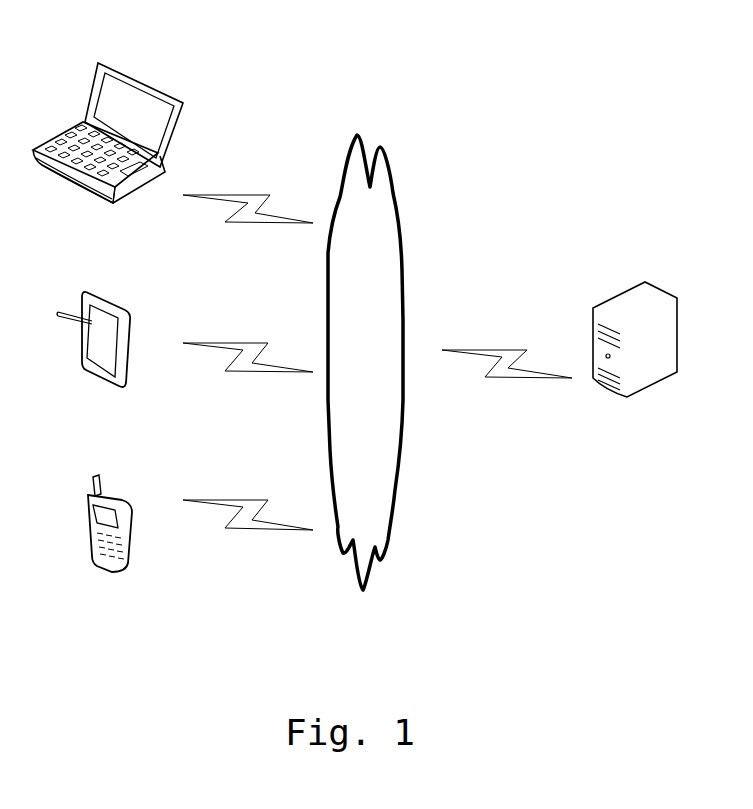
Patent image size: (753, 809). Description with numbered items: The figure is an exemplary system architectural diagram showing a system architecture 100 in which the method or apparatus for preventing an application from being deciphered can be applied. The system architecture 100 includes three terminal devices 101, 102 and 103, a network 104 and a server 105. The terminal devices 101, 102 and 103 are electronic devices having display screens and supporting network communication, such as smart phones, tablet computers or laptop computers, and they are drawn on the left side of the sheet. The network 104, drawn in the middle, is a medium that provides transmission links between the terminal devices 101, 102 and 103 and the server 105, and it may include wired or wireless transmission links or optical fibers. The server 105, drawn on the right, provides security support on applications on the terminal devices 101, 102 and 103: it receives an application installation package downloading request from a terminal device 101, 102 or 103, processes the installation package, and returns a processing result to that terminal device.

The system architecture 100 is at (596, 53).
The terminal device 101 is at (110, 540).
The terminal device 102 is at (93, 355).
The terminal device 103 is at (108, 151).
The network 104 is at (365, 362).
The server 105 is at (635, 356).